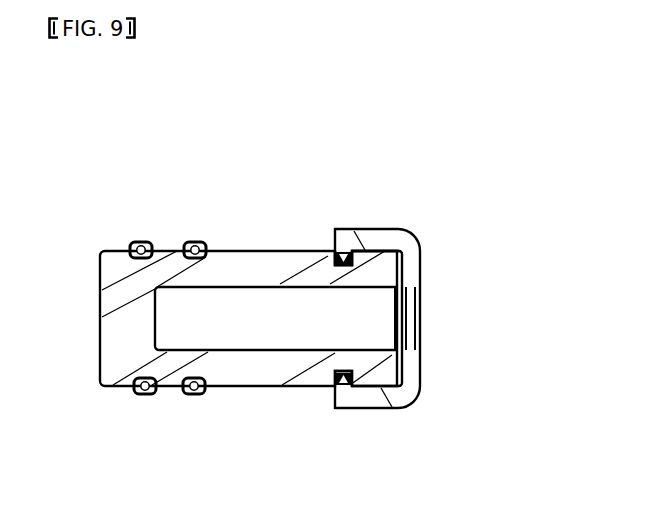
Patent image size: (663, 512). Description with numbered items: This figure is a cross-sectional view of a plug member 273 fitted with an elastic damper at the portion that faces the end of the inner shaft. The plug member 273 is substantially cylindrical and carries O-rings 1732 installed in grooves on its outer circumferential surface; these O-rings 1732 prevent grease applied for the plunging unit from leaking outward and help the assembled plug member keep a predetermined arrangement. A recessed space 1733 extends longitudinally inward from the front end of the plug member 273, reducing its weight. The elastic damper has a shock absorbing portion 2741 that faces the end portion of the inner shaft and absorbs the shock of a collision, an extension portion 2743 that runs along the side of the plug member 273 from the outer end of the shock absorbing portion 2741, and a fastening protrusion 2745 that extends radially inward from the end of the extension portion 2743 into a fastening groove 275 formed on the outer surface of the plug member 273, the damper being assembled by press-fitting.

The plug member 273 is at (243, 226).
The fastening groove 275 is at (330, 257).
The O-ring 1732 is at (143, 395).
The recessed space 1733 is at (299, 323).
The shock absorbing portion 2741 is at (422, 260).
The extension portion 2743 is at (382, 238).
The fastening protrusion 2745 is at (346, 246).